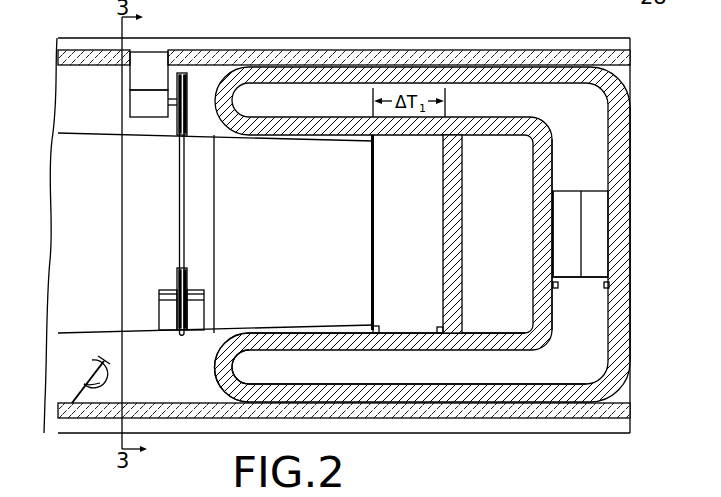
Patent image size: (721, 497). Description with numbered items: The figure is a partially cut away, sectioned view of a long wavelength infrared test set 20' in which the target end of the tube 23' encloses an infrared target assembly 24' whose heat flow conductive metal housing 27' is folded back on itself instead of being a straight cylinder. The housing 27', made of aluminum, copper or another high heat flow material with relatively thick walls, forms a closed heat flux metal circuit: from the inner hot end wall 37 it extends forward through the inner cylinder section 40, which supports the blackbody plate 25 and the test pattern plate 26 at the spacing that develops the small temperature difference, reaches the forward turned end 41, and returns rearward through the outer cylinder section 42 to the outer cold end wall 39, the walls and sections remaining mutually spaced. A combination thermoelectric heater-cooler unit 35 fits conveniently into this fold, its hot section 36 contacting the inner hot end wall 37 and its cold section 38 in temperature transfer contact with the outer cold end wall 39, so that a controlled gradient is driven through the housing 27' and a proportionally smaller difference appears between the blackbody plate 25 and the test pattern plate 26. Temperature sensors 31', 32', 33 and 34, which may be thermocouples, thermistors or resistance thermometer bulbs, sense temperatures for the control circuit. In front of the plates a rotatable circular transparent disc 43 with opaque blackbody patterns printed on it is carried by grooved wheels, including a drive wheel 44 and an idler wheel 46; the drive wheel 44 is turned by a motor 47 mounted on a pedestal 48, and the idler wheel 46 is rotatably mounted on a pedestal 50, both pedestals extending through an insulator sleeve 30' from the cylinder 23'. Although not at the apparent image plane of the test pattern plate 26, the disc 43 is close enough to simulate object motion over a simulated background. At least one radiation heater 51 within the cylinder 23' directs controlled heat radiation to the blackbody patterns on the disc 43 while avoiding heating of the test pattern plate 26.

The long wavelength infrared test set 20' is at (337, 255).
The tube 23' is at (344, 74).
The infrared target assembly 24' is at (451, 234).
The blackbody plate 25 is at (443, 232).
The test pattern plate 26 is at (370, 232).
The housing 27' is at (216, 367).
The insulator sleeve 30' is at (370, 61).
The temperature sensor 31' is at (599, 318).
The temperature sensor 32' is at (567, 315).
The temperature sensor 33 is at (376, 327).
The temperature sensor 34 is at (440, 328).
The combination thermoelectric heater-cooler unit 35 is at (570, 178).
The hot section 36 is at (565, 278).
The inner hot end wall 37 is at (533, 201).
The cold section 38 is at (572, 278).
The outer cold end wall 39 is at (630, 233).
The inner cylinder section 40 is at (405, 351).
The forward turned end 41 is at (233, 362).
The outer cylinder section 42 is at (352, 383).
The rotatable circular transparent disc 43 is at (178, 196).
The drive wheel 44 is at (186, 107).
The idler wheel 46 is at (177, 278).
The motor 47 is at (130, 106).
The pedestal 48 is at (130, 72).
The pedestal 50 is at (165, 301).
The radiation heater 51 is at (88, 379).